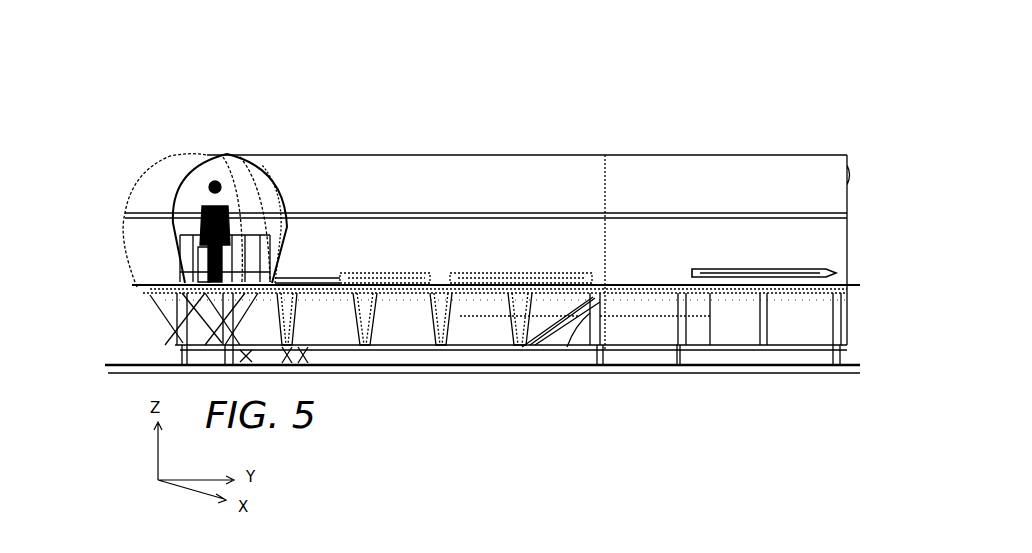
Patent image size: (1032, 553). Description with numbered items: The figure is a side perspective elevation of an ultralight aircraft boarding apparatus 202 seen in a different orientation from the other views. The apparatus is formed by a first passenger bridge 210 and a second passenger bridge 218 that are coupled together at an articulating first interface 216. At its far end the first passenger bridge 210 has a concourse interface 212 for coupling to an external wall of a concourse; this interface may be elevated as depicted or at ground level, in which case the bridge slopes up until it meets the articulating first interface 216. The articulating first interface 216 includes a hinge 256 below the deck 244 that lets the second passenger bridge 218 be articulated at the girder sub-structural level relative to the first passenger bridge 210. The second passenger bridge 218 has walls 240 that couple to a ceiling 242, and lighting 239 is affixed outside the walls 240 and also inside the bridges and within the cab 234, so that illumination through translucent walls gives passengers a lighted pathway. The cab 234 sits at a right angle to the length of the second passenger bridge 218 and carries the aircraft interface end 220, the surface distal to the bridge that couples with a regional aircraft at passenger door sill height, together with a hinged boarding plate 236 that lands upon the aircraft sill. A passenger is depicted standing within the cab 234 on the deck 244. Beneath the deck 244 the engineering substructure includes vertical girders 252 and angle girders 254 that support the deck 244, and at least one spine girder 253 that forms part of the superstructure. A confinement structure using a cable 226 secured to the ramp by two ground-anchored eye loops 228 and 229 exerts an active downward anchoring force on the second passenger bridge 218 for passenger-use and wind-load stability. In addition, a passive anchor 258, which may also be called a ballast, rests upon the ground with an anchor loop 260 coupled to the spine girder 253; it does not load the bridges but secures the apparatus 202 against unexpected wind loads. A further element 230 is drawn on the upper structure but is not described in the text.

The aircraft boarding apparatus 202 is at (818, 24).
The first passenger bridge 210 is at (832, 113).
The concourse interface 212 is at (847, 152).
The articulating first interface 216 is at (604, 180).
The second passenger bridge 218 is at (597, 112).
The aircraft interface end 220 is at (127, 217).
The cable 226 is at (172, 350).
The ground-anchored eye loop 228 is at (167, 362).
The ground-anchored eye loop 229 is at (247, 360).
The panel 230 is at (755, 266).
The cab 234 is at (208, 162).
The boarding plate 236 is at (275, 282).
The lighting 239 is at (358, 273).
The walls 240 is at (153, 258).
The ceiling 242 is at (163, 160).
The deck 244 is at (677, 283).
The vertical girders 252 is at (522, 348).
The spine girder 253 is at (345, 340).
The angle girders 254 is at (160, 298).
The hinge 256 is at (567, 348).
The passive anchor 258 is at (632, 356).
The anchor loop 260 is at (640, 345).